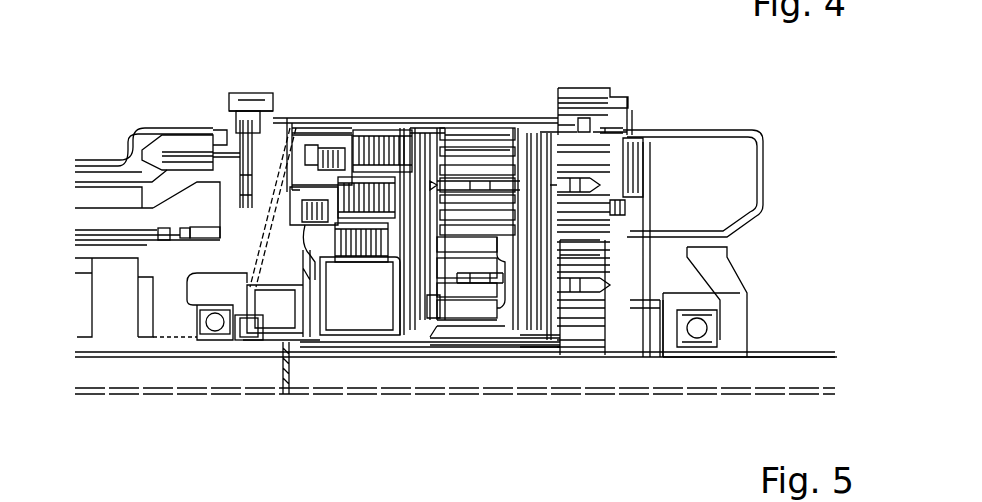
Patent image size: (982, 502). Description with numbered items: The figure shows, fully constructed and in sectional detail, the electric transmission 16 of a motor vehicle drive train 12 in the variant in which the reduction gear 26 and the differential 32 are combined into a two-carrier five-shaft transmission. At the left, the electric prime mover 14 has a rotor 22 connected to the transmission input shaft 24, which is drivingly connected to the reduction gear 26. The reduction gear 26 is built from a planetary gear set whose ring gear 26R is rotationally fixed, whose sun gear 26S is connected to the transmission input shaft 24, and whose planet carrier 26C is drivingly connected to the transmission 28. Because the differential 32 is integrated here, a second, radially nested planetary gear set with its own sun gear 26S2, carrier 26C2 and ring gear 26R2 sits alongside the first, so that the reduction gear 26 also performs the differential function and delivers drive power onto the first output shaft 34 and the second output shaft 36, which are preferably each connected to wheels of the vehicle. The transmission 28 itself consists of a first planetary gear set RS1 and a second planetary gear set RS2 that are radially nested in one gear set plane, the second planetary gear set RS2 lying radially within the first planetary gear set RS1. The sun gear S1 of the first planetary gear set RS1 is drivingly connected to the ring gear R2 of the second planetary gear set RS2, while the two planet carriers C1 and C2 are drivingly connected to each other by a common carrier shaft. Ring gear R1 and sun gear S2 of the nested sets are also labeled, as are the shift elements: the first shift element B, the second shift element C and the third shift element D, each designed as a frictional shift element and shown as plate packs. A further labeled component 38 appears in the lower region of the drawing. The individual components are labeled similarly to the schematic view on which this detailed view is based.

The motor vehicle drive train 12 is at (212, 80).
The electric prime mover 14 is at (107, 150).
The electric transmission 16 is at (183, 86).
The rotor 22 is at (98, 337).
The transmission input shaft 24 is at (330, 370).
The reduction gear 26 is at (641, 110).
The planet carrier 26C is at (553, 330).
The carrier 26C2 is at (630, 207).
The ring gear 26R is at (720, 233).
The ring gear 26R2 is at (632, 130).
The sun gear 26S is at (607, 330).
The sun gear 26S2 is at (625, 217).
The transmission 28 is at (458, 405).
The differential 32 is at (658, 108).
The first output shaft 34 is at (252, 390).
The second output shaft 36 is at (820, 355).
The support 38 is at (300, 501).
The first shift element B is at (452, 128).
The second shift element C is at (432, 130).
The planet carrier C1 is at (547, 130).
The planet carrier C2 is at (427, 335).
The third shift element D is at (422, 130).
The first ring gear R1 is at (520, 130).
The ring gear R2 is at (492, 330).
The first planetary gear set RS1 is at (477, 100).
The second planetary gear set RS2 is at (500, 405).
The sun gear S1 is at (420, 235).
The second sun gear S2 is at (445, 330).